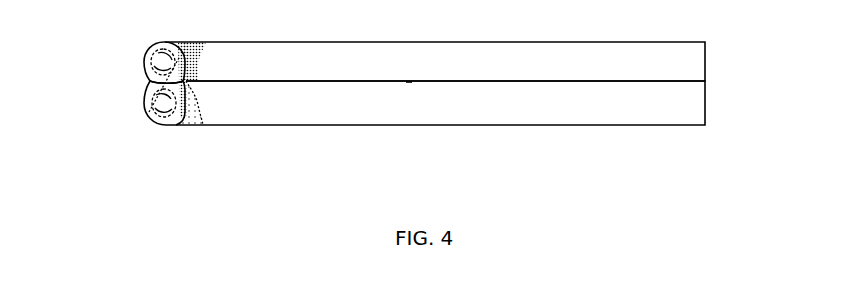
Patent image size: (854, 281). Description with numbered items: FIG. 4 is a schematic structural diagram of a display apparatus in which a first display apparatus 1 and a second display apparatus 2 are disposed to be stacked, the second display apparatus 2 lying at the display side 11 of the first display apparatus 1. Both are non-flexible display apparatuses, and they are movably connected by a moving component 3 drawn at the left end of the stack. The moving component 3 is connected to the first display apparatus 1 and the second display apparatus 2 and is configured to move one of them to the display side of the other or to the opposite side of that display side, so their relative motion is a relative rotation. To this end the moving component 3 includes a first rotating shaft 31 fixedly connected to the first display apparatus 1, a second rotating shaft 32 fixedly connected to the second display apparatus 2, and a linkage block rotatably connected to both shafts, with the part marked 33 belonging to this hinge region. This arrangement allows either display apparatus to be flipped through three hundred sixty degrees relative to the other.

The first display apparatus 1 is at (705, 112).
The second display apparatus 2 is at (705, 68).
The moving component 3 is at (93, 25).
The display side 11 is at (408, 82).
The first rotating shaft 31 is at (145, 101).
The second rotating shaft 32 is at (150, 46).
The adhesive / filler 33 is at (148, 81).